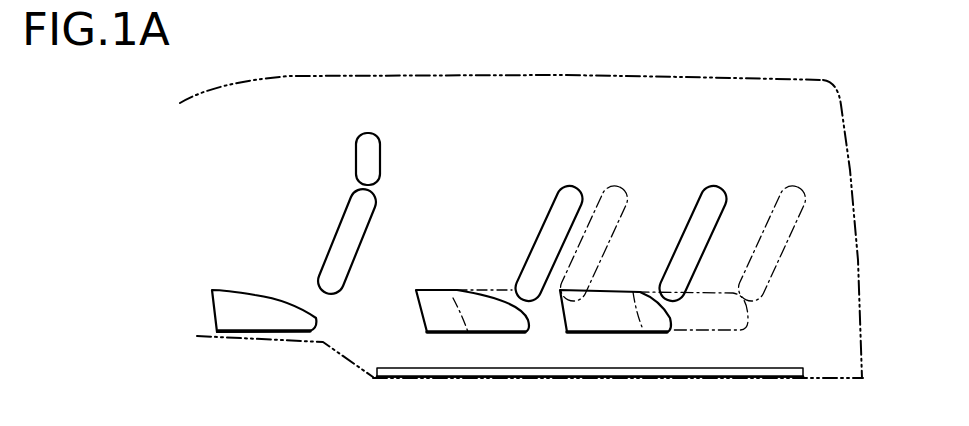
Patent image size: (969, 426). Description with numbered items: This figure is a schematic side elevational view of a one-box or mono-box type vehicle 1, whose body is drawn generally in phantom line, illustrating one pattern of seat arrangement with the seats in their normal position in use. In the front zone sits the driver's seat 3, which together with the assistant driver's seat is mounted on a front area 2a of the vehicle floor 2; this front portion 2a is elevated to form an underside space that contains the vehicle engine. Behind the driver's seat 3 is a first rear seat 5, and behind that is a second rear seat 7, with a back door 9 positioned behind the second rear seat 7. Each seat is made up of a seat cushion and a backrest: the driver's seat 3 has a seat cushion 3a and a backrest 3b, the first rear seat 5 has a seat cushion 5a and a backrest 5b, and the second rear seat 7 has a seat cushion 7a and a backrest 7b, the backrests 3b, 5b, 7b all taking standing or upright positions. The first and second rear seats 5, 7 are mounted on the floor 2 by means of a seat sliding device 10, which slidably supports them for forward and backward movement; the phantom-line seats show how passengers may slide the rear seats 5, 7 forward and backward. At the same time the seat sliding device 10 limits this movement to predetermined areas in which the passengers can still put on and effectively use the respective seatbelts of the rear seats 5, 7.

The vehicle 1 is at (730, 70).
The vehicle floor 2 is at (713, 378).
The front area of vehicle floor 2a is at (252, 341).
The driver's seat 3 is at (280, 217).
The seat cushion 3a is at (237, 298).
The backrest 3b is at (343, 205).
The first rear seat 5 is at (490, 240).
The seat cushion 5a is at (432, 297).
The backrest 5b is at (552, 203).
The second rear seat 7 is at (660, 208).
The seat cushion 7a is at (612, 292).
The backrest 7b is at (702, 197).
The back door 9 is at (848, 127).
The seat sliding device 10 is at (640, 374).